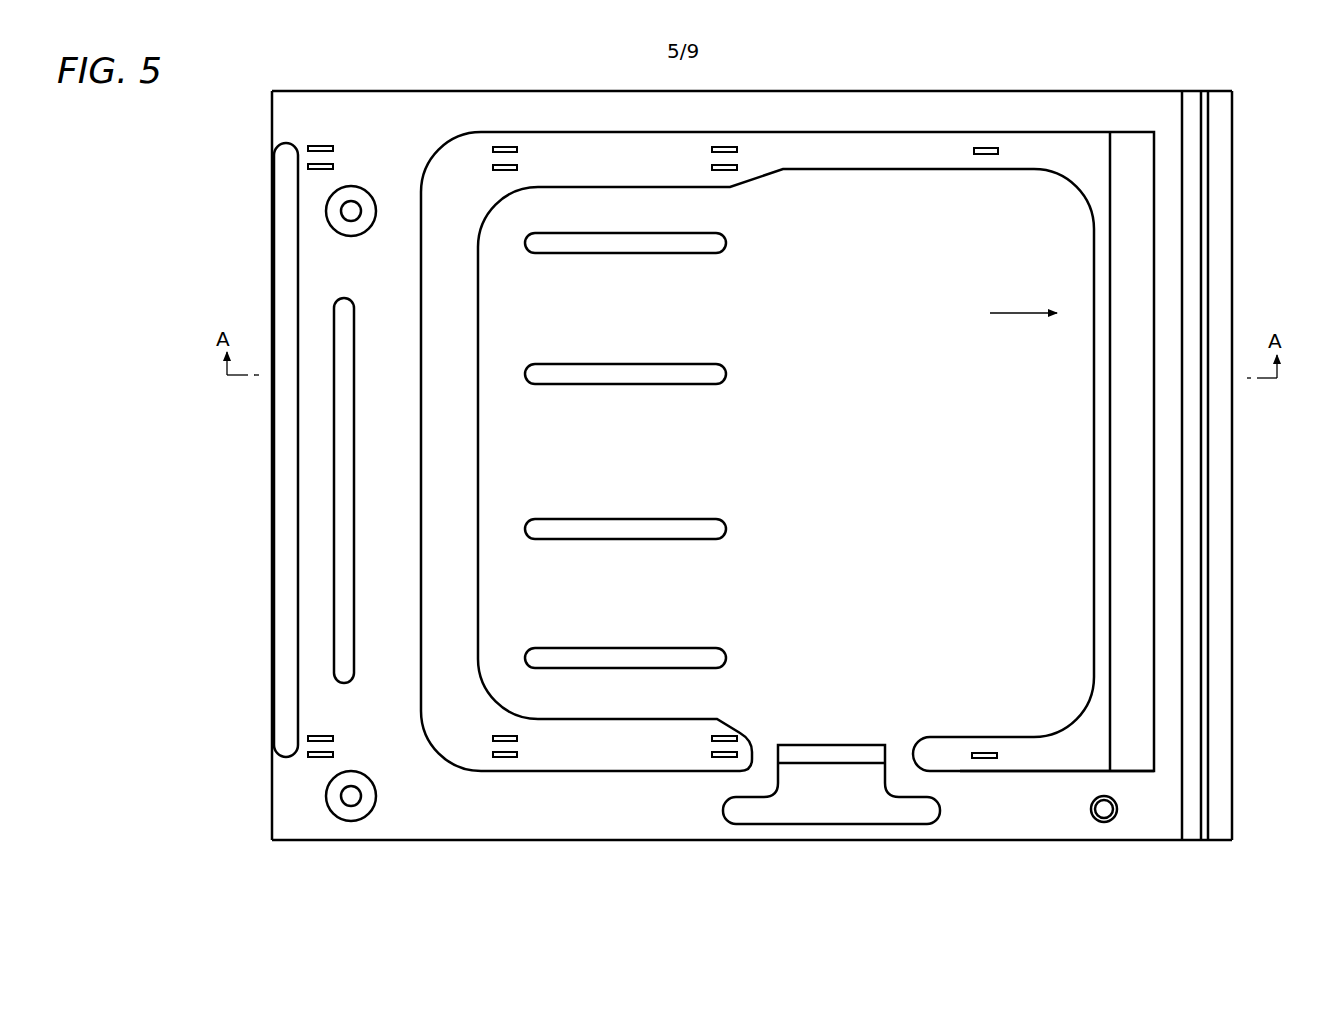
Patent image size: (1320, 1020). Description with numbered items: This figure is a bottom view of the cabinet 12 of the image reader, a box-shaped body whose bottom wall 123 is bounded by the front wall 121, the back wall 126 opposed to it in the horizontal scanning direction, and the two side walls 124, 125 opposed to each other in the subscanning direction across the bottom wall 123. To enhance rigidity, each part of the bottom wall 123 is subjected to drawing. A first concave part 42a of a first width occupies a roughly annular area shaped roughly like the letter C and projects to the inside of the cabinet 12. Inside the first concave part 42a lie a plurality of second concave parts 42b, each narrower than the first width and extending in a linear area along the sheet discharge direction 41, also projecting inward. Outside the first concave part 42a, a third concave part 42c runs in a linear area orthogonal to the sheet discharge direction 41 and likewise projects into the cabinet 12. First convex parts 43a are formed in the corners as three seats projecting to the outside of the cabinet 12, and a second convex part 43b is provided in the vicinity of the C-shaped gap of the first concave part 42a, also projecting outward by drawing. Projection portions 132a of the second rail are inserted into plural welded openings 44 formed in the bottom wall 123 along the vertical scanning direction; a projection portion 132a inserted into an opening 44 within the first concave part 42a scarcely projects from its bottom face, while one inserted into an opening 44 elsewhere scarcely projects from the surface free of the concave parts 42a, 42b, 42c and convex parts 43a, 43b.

The cabinet 12 is at (792, 469).
The front wall 121 is at (398, 92).
The bottom wall 123 is at (847, 113).
The side wall 124 is at (283, 285).
The side wall 125 is at (1235, 279).
The back wall 126 is at (590, 841).
The projection portion 132a is at (731, 145).
The sheet discharge direction 41 is at (1012, 312).
The first concave part 42a is at (1033, 758).
The second concave part 42b is at (614, 246).
The third concave part 42c is at (343, 559).
The first convex part 43a is at (341, 212).
The second convex part 43b is at (793, 815).
The welded opening 44 is at (313, 163).